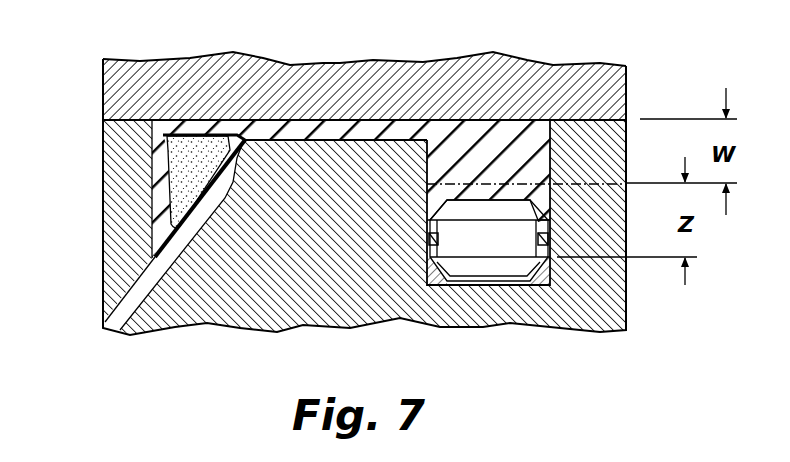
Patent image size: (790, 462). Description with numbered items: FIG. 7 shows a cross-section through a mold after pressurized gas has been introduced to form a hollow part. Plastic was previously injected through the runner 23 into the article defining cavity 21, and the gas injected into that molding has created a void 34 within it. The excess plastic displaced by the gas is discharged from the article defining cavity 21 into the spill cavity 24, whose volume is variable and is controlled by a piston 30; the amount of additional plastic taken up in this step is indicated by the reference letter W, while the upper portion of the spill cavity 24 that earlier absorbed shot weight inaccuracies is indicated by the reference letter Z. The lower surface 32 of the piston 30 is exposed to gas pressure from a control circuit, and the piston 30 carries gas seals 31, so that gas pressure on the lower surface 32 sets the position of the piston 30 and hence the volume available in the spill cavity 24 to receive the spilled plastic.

The article defining cavity 21 is at (162, 197).
The runner 23 is at (398, 141).
The spill cavity 24 is at (558, 104).
The piston 30 is at (556, 283).
The gas seals 31 is at (426, 238).
The lower surface 32 is at (520, 238).
The void 34 is at (180, 158).